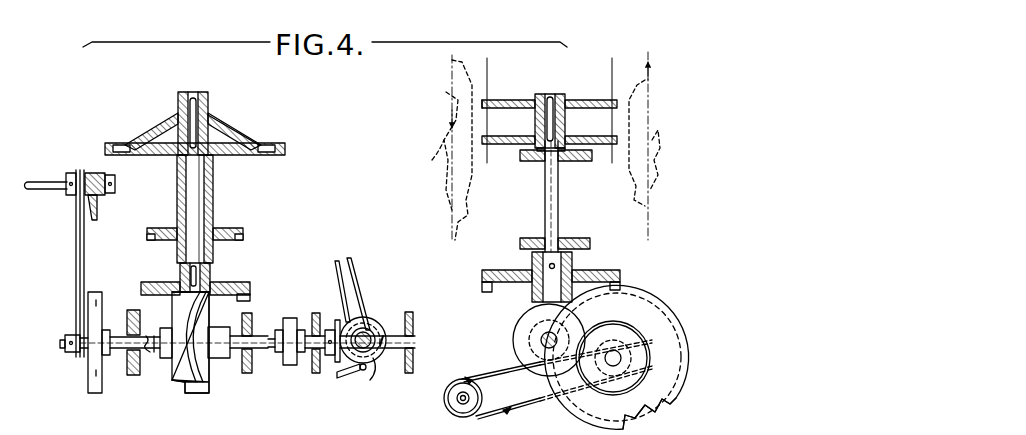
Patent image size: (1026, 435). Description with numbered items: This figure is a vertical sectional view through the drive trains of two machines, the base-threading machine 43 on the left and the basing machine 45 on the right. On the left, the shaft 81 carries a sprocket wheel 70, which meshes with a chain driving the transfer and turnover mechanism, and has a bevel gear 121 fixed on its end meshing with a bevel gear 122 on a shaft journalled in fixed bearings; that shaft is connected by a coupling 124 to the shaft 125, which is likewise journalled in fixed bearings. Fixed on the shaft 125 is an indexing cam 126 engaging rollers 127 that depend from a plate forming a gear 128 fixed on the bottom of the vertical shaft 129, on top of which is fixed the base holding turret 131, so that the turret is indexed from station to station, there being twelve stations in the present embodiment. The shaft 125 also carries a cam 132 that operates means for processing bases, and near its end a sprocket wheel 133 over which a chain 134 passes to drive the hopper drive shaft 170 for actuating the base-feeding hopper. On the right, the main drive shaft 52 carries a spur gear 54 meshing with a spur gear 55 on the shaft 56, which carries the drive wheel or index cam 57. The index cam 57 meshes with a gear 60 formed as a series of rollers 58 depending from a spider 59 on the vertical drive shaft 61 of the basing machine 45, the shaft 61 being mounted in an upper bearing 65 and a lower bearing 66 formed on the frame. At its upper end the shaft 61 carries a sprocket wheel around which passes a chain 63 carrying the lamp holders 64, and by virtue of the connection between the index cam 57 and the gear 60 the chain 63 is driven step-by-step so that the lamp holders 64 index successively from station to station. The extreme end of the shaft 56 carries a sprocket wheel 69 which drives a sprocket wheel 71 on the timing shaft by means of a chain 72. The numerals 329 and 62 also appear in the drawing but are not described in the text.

The base-threading machine 43 is at (165, 126).
The base holding turret 131 is at (248, 143).
The shaft 129 is at (196, 216).
The gear 128 is at (233, 283).
The rollers 127 is at (252, 296).
The indexing cam 126 is at (203, 393).
The shaft 125 is at (237, 350).
The coupling 124 is at (288, 366).
The bevel gear 122 is at (334, 320).
The bevel gear 121 is at (378, 320).
The shaft 81 is at (374, 380).
The sprocket wheel 70 is at (410, 374).
The cam 132 is at (96, 393).
The sprocket wheel 133 is at (68, 354).
The chain 134 is at (76, 267).
The hopper drive shaft 170 is at (50, 180).
The basing machine 45 is at (589, 97).
The pulley rim 329 is at (482, 101).
The upper pulley 62 is at (537, 78).
The upper bearing 65 is at (536, 161).
The chain 63 is at (615, 164).
The vertical drive shaft 61 is at (558, 214).
The lower bearing 66 is at (533, 243).
The lamp holders 64 is at (442, 156).
The gear 60 is at (500, 270).
The spider 59 is at (592, 271).
The rollers 58 is at (621, 284).
The index cam 57 is at (643, 321).
The sprocket wheel 69 is at (662, 404).
The spur gear 55 is at (610, 336).
The shaft 56 is at (622, 358).
The spur gear 54 is at (526, 323).
The main drive shaft 52 is at (540, 341).
The sprocket wheel 71 is at (459, 401).
The chain 72 is at (548, 400).